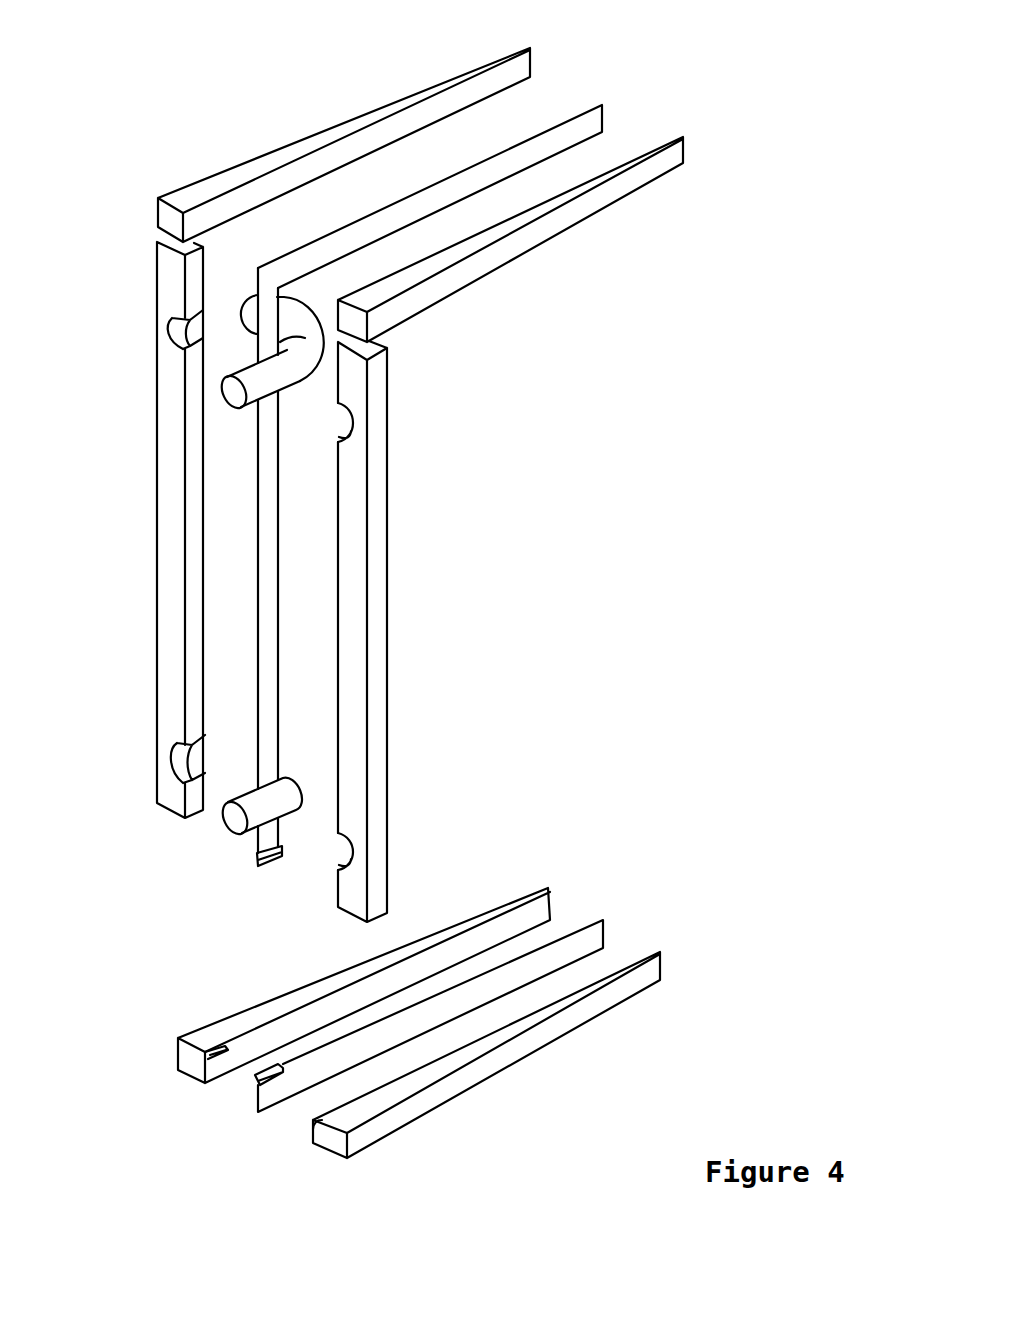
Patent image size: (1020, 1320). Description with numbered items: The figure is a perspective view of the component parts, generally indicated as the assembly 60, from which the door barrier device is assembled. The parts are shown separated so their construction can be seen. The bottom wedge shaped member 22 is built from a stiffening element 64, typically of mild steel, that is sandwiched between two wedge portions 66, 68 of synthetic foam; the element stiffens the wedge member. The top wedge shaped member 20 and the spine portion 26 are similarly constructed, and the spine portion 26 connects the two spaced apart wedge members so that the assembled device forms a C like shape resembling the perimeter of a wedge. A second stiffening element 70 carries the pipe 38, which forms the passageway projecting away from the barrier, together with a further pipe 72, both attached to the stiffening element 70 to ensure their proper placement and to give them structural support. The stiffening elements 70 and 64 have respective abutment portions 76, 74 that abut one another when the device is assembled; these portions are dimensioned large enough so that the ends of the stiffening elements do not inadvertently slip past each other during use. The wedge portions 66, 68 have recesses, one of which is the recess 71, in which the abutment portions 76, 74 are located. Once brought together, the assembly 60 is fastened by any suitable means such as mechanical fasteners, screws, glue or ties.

The component parts 60 is at (138, 108).
The wedge shaped member 20 is at (278, 130).
The spine portion 26 is at (398, 493).
The pipe 38 is at (247, 370).
The pipe 72 is at (225, 828).
The stiffening element 70 is at (268, 837).
The abutment portion 76 is at (258, 865).
The recess 71 is at (213, 1048).
The wedge portion 66 is at (193, 1063).
The abutment portion 74 is at (257, 1080).
The stiffening element 64 is at (273, 1093).
The wedge portion 68 is at (335, 1145).
The wedge shaped member 22 is at (575, 1082).